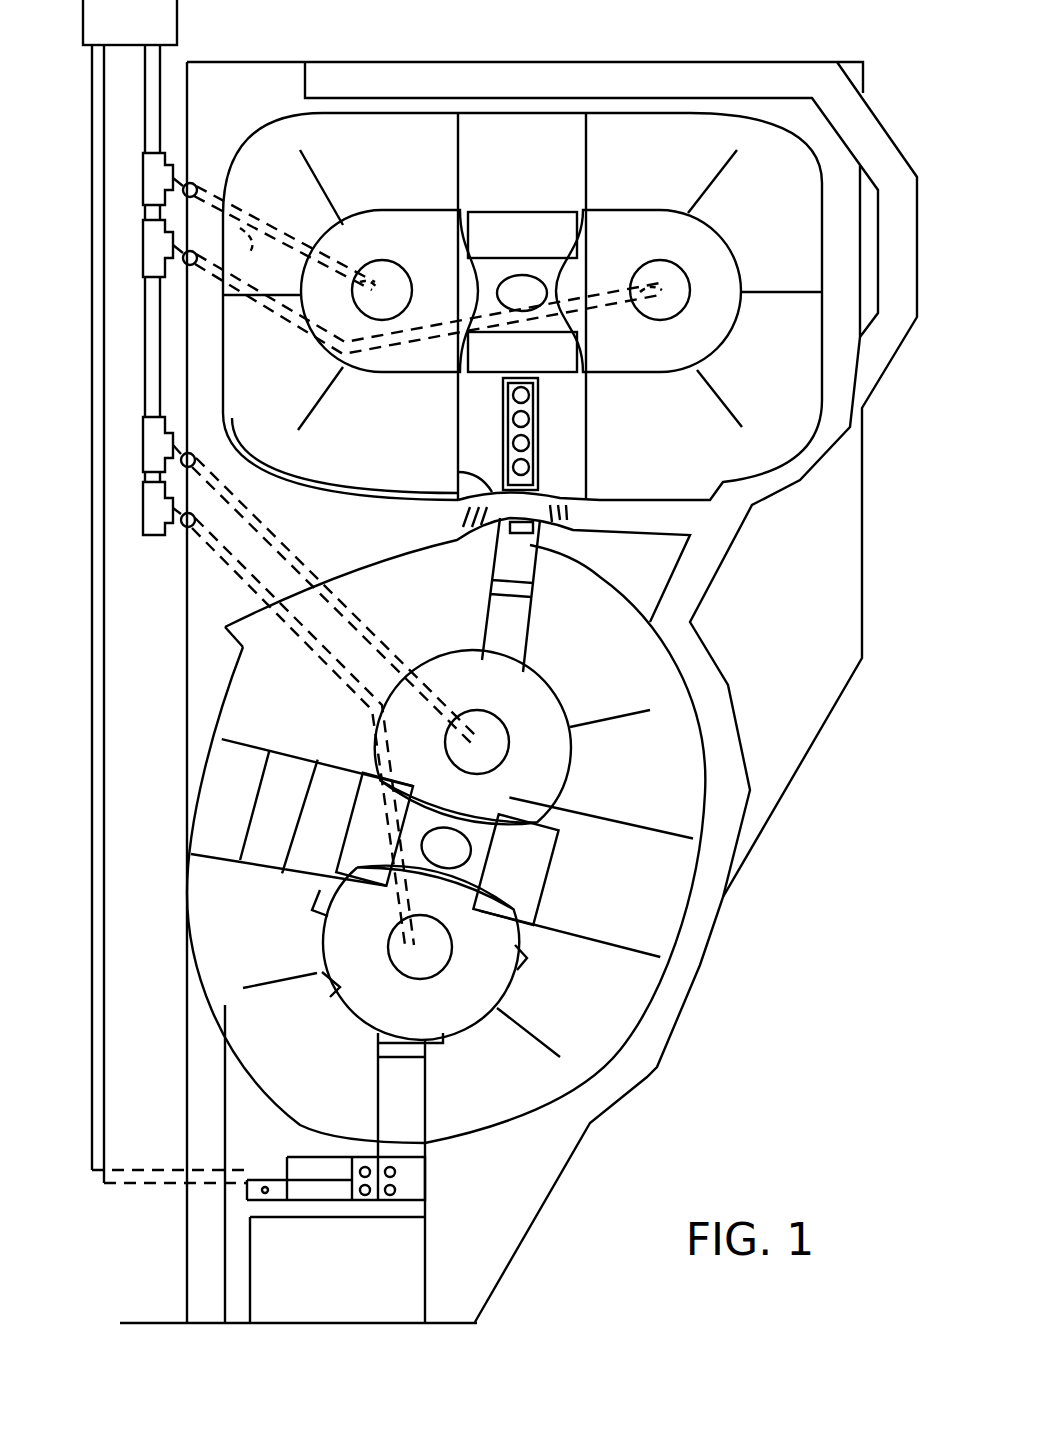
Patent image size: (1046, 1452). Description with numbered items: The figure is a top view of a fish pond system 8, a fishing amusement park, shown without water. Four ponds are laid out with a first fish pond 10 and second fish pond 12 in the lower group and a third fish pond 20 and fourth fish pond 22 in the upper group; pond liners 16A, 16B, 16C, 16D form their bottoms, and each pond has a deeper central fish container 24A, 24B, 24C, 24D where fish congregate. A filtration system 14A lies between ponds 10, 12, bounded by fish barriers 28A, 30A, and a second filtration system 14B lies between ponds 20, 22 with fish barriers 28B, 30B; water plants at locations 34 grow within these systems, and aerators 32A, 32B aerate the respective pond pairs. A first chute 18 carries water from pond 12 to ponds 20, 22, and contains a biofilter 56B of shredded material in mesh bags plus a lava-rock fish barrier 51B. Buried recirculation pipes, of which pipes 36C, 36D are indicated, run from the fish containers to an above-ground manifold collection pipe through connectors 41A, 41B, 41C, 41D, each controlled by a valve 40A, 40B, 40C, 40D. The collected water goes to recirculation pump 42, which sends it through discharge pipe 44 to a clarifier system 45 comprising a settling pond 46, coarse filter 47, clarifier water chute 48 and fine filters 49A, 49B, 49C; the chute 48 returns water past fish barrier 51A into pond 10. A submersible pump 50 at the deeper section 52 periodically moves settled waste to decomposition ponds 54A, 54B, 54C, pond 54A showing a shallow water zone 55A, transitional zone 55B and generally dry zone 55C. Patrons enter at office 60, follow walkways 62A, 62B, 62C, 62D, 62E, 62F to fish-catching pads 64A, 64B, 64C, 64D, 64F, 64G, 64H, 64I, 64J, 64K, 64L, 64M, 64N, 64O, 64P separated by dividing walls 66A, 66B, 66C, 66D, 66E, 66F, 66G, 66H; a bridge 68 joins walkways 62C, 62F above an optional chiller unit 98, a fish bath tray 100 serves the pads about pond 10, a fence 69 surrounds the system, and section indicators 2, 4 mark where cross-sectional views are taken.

The section line 2 is at (590, 789).
The section line 4 is at (383, 1152).
The fish pond system 8 is at (796, 826).
The first fish pond 10 is at (461, 1019).
The second fish pond 12 is at (533, 659).
The filtration system 14A is at (563, 859).
The second filtration system 14B is at (495, 198).
The first pond liner 16A is at (456, 974).
The second pond liner 16B is at (516, 776).
The pond liner 16C is at (437, 252).
The pond liner 16D is at (636, 357).
The first chute 18 is at (538, 395).
The third fish pond 20 is at (377, 383).
The fourth fish pond 22 is at (728, 358).
The fish container 24A is at (402, 956).
The fish container 24B is at (505, 690).
The fish container 24C is at (370, 278).
The fish container 24D is at (688, 268).
The fish barrier 28A is at (553, 910).
The fish barrier 28B is at (452, 342).
The fish barrier 30A is at (555, 820).
The fish barrier 30B is at (586, 228).
The aerator 32A is at (470, 830).
The aerator 32B is at (558, 290).
The water plants 34 is at (502, 241).
The recirculation pipe 36C is at (261, 256).
The recirculation pipe 36D is at (272, 318).
The valve 40A is at (196, 535).
The valve 40B is at (215, 458).
The valve 40C is at (190, 265).
The valve 40D is at (190, 183).
The connector 41A is at (152, 535).
The connector 41B is at (143, 448).
The connector 41C is at (143, 262).
The connector 41D is at (143, 178).
The recirculation pump 42 is at (83, 28).
The discharge pipe 44 is at (100, 365).
The clarifier system 45 is at (349, 1143).
The settling pond 46 is at (338, 1147).
The coarse filter 47 is at (350, 1180).
The clarifier water chute 48 is at (378, 1082).
The fine filter 49A is at (395, 1200).
The fine filter 49B is at (430, 1163).
The fine filter 49C is at (418, 1062).
The submersible pump 50 is at (265, 1195).
The fish barrier 51A is at (378, 1050).
The fish barrier 51B is at (535, 600).
The deeper section 52 is at (335, 1160).
The decomposition pond 54A is at (264, 730).
The decomposition pond 54B is at (604, 904).
The decomposition pond 54C is at (495, 157).
The shallow water zone 55A is at (215, 850).
The transitional zone 55B is at (258, 865).
The generally dry zone 55C is at (300, 885).
The biofilter 56B is at (540, 452).
The office 60 is at (312, 1279).
The walkway 62A is at (225, 1228).
The walkway 62B is at (592, 1103).
The walkway 62C is at (645, 531).
The walkway 62D is at (680, 92).
The walkway 62E is at (318, 572).
The walkway 62F is at (375, 530).
The fish-catching pad 64A is at (212, 977).
The fish-catching pad 64B is at (292, 1039).
The fish-catching pad 64C is at (477, 1074).
The fish-catching pad 64D is at (524, 1007).
The fish-catching pad 64F is at (552, 679).
The fish-catching pad 64G is at (428, 597).
The fish-catching pad 64H is at (296, 730).
The fish-catching pad 64I is at (393, 424).
The fish-catching pad 64J is at (244, 387).
The fish-catching pad 64K is at (292, 201).
The fish-catching pad 64L is at (405, 186).
The fish-catching pad 64M is at (612, 154).
The fish-catching pad 64N is at (790, 251).
The fish-catching pad 64O is at (790, 361).
The fish-catching pad 64P is at (610, 419).
The dividing wall 66A is at (262, 990).
The dividing wall 66B is at (545, 1040).
The dividing wall 66C is at (595, 722).
The dividing wall 66D is at (372, 640).
The dividing wall 66E is at (312, 430).
The dividing wall 66F is at (325, 165).
The dividing wall 66G is at (722, 172).
The dividing wall 66H is at (725, 432).
The bridge 68 is at (458, 473).
The fence 69 is at (862, 572).
The chiller unit 98 is at (511, 595).
The fish bath tray 100 is at (384, 980).